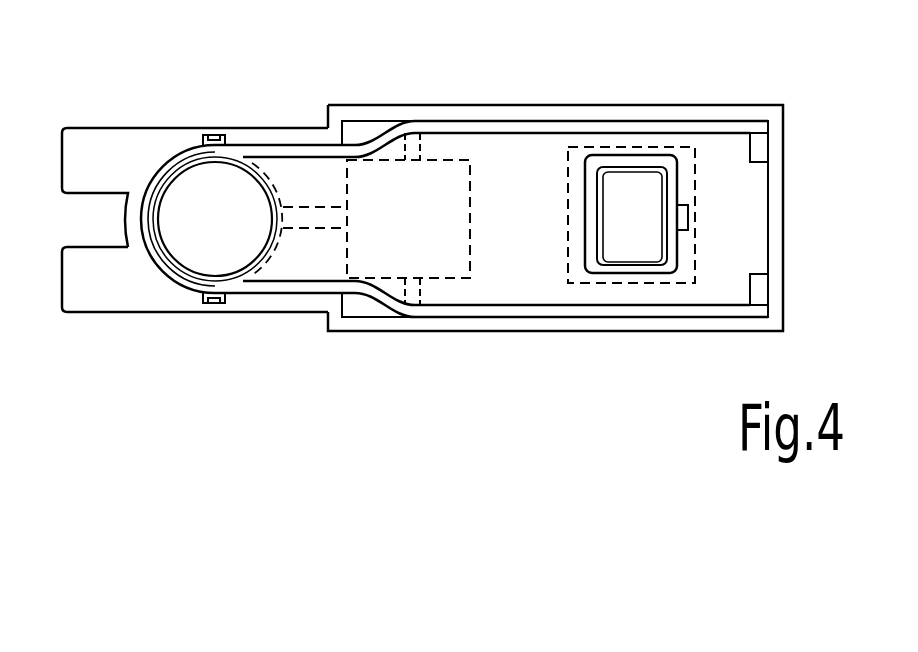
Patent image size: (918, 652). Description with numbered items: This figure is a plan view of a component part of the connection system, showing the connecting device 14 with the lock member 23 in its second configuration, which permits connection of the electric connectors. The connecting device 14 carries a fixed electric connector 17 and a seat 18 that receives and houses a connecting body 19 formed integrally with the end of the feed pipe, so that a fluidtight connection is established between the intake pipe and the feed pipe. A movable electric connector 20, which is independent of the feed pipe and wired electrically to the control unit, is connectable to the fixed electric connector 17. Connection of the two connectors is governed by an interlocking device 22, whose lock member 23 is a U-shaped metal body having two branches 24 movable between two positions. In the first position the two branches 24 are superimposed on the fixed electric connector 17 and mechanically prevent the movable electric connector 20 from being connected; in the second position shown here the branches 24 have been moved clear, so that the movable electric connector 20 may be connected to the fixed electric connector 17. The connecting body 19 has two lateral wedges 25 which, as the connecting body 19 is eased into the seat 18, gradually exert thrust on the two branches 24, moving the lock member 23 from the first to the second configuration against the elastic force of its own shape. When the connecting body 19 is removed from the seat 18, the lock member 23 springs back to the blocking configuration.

The connecting device 14 is at (495, 326).
The fixed electric connector 17 is at (670, 193).
The seat 18 is at (210, 213).
The connecting body 19 is at (288, 248).
The movable electric connector 20 is at (660, 147).
The interlocking device 22 is at (304, 106).
The lock member 23 is at (310, 324).
The branches 24 is at (545, 132).
The lateral wedges 25 is at (421, 133).